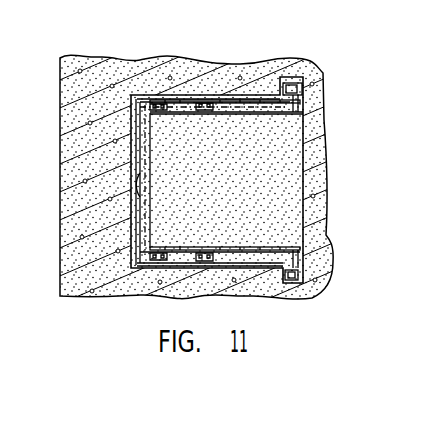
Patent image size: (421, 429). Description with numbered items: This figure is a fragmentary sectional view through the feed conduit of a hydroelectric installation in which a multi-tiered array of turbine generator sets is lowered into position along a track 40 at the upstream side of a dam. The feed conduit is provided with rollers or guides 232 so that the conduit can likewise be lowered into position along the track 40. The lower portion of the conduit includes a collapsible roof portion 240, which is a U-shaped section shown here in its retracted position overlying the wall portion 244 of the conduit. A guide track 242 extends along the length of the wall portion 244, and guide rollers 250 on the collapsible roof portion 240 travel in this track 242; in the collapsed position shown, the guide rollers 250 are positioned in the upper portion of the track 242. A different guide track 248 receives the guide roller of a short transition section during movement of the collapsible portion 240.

The track 40 is at (333, 243).
The rollers or guides 232 is at (303, 85).
The collapsible roof portion 240 is at (146, 168).
The guide track 242 is at (198, 107).
The wall portion 244 is at (272, 110).
The guide track 248 is at (158, 110).
The guide rollers 250 is at (213, 103).